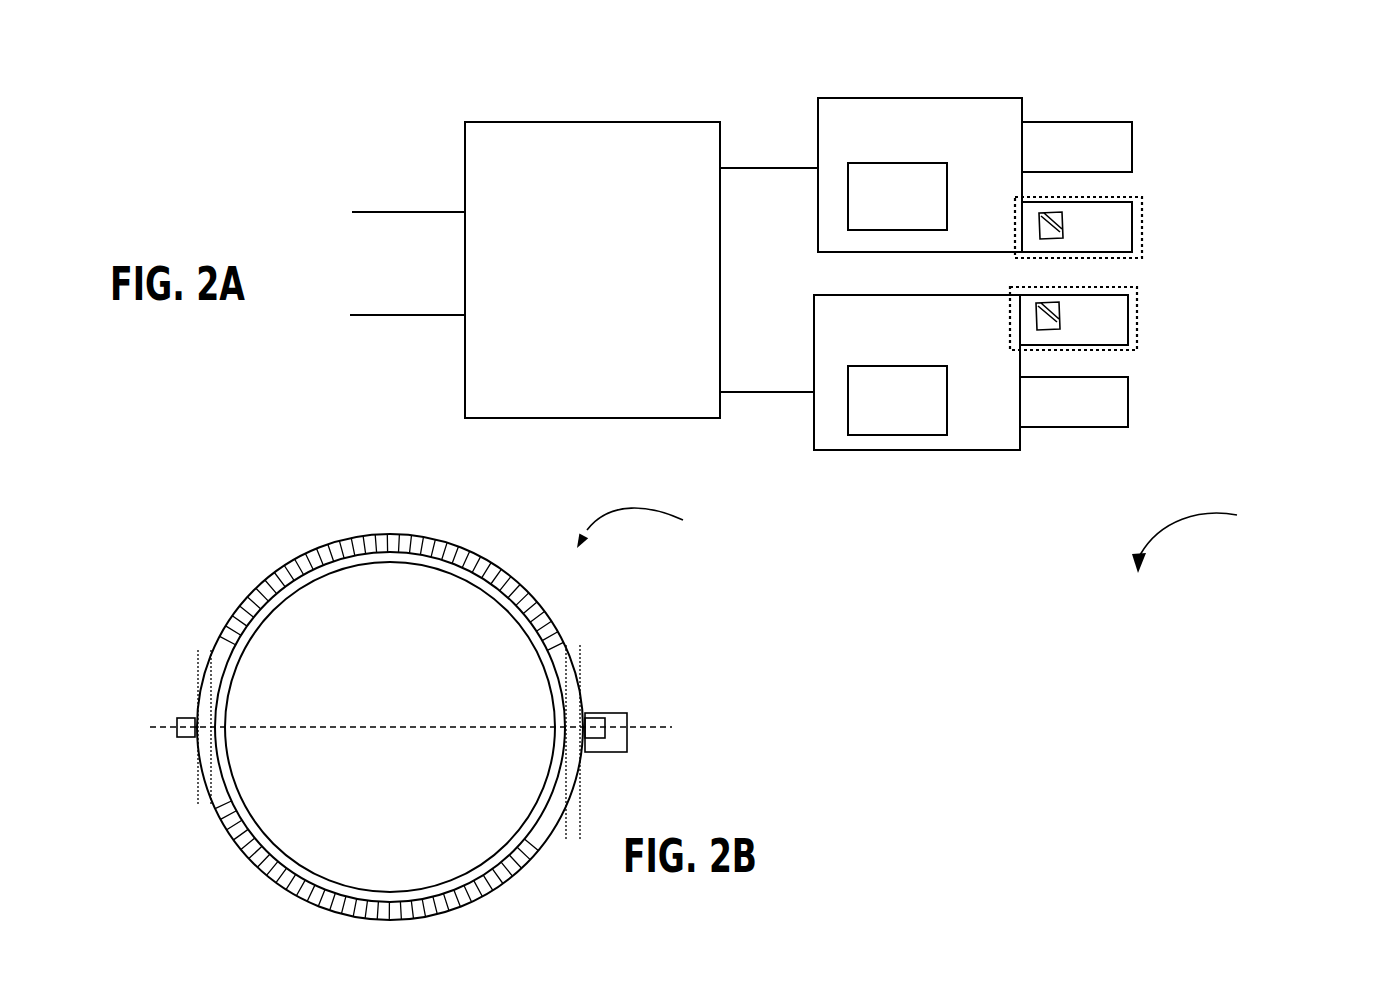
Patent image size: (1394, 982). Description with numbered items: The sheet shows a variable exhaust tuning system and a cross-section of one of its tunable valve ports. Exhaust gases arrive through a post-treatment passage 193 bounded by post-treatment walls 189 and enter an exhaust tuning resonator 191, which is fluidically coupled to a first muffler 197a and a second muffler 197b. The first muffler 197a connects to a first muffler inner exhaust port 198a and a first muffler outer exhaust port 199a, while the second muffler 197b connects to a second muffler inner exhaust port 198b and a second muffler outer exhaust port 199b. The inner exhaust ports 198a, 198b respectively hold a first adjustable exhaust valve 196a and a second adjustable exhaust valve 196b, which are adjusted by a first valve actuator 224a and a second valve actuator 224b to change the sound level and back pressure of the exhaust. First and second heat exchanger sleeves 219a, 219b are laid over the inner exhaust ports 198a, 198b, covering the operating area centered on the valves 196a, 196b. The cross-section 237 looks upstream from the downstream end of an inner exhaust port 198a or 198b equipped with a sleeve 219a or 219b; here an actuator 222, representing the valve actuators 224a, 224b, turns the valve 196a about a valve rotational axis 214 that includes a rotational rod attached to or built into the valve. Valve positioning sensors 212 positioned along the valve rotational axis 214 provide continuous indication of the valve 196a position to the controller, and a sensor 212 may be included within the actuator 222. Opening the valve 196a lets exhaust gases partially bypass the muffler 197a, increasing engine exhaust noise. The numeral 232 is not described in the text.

In FIG. 2A, the post-treatment walls 189 is at (387, 316).
In FIG. 2A, the exhaust tuning resonator 191 is at (607, 278).
In FIG. 2A, the post-treatment passage 193 is at (415, 276).
In FIG. 2A, the first adjustable exhaust valve 196a is at (1053, 205).
In FIG. 2B, the first adjustable exhaust valve 196a is at (415, 716).
In FIG. 2A, the second adjustable exhaust valve 196b is at (1090, 348).
In FIG. 2A, the first muffler 197a is at (818, 97).
In FIG. 2A, the second muffler 197b is at (878, 450).
In FIG. 2A, the first muffler inner exhaust port 198a is at (1143, 232).
In FIG. 2A, the second muffler inner exhaust port 198b is at (1133, 305).
In FIG. 2A, the first muffler outer exhaust port 199a is at (1132, 122).
In FIG. 2A, the second muffler outer exhaust port 199b is at (1128, 421).
In FIG. 2A, the first heat exchanger sleeve 219a is at (1143, 200).
In FIG. 2B, the first heat exchanger sleeve 219a is at (528, 588).
In FIG. 2A, the second heat exchanger sleeve 219b is at (1140, 290).
In FIG. 2A, the first valve actuator 224a is at (1042, 206).
In FIG. 2A, the second valve actuator 224b is at (1043, 303).
In FIG. 2B, the valve positioning sensor 212 is at (190, 717).
In FIG. 2B, the valve rotational axis 214 is at (210, 755).
In FIG. 2B, the actuator 222 is at (628, 728).
In FIG. 2B, the heating trace 232 is at (548, 820).
In FIG. 2B, the cross-section 237 is at (651, 528).